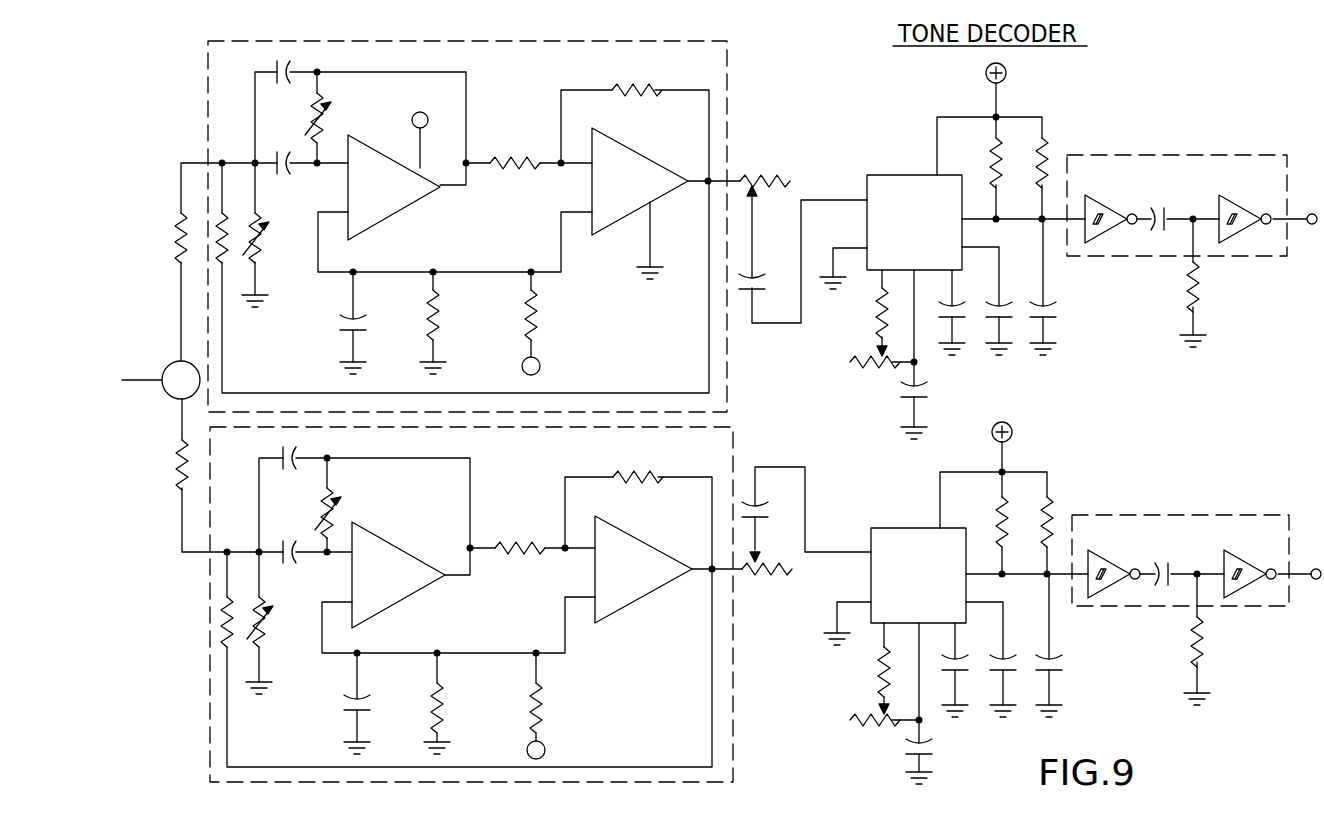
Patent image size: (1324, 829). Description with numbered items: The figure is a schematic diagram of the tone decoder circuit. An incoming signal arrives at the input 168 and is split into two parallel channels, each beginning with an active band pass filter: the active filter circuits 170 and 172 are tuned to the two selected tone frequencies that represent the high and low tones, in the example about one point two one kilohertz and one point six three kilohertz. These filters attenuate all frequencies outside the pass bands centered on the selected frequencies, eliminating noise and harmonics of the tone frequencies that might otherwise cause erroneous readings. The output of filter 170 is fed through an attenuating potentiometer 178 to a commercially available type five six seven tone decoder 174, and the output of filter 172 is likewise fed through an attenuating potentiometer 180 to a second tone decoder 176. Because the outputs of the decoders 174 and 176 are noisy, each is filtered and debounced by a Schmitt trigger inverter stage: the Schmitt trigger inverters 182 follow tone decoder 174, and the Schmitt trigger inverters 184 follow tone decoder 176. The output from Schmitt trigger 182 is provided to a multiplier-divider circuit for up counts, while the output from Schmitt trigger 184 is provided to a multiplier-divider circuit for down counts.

The input jack 168 is at (140, 378).
The active band pass filter 170 is at (732, 50).
The active band pass filter 172 is at (735, 715).
The tone decoder 174 is at (885, 175).
The tone decoder 176 is at (893, 527).
The attenuating potentiometer 178 is at (756, 178).
The attenuating potentiometer 180 is at (760, 575).
The Schmitt trigger inverter 182 is at (1217, 152).
The Schmitt trigger inverter 184 is at (1220, 512).